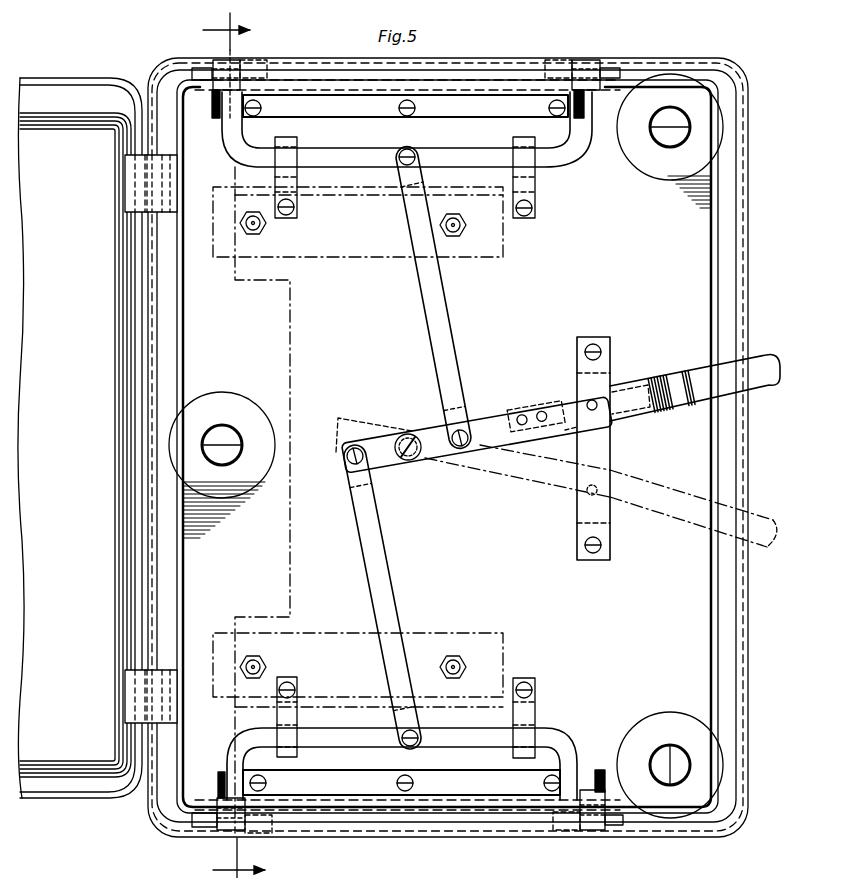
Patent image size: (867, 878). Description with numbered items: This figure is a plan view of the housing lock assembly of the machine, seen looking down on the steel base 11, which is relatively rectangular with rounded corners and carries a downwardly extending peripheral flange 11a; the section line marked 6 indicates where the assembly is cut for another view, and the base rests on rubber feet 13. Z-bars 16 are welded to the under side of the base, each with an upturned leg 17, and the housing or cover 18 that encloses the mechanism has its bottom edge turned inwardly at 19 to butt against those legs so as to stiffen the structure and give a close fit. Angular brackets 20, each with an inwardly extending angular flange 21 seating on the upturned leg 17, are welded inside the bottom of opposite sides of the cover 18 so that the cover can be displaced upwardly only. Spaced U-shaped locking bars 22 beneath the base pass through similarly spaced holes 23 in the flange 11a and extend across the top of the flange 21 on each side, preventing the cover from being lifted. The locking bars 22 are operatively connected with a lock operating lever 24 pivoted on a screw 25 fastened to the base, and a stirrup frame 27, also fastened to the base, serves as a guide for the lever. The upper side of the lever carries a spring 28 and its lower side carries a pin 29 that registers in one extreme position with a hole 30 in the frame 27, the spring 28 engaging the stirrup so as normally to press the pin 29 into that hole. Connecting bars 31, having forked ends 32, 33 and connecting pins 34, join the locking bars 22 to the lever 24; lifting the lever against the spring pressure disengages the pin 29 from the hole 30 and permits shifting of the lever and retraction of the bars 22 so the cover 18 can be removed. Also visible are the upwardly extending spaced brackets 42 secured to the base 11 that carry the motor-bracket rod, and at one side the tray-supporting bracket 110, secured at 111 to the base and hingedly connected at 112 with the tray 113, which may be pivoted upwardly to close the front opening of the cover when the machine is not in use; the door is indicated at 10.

The section line 6- 6 is at (224, 445).
The door 10 is at (113, 870).
The base 11 is at (704, 258).
The peripheral flange 11a is at (721, 605).
The rubber feet 13 is at (648, 171).
The Z-bars 16 is at (489, 78).
The upturned leg 17 is at (529, 72).
The housing 18 is at (407, 868).
The inturned bottom edge 19 is at (660, 60).
The angular brackets 20 is at (211, 62).
The angular flange 21 is at (200, 72).
The U-shaped locking bars 22 is at (228, 126).
The holes 23 is at (256, 68).
The lock operating lever 24 is at (698, 374).
The screw 25 is at (409, 461).
The stirrup frame 27 is at (604, 449).
The spring 28 is at (532, 407).
The pin 29 is at (598, 401).
The hole 30 is at (592, 411).
The connecting bars 31 is at (430, 313).
The forked end 32 is at (445, 409).
The forked end 33 is at (422, 181).
The connecting pins 34 is at (412, 152).
The upwardly extending brackets 42 is at (339, 192).
The tray-supporting bracket 110 is at (160, 212).
The securing point 111 is at (172, 159).
The hinge connection 112 is at (165, 204).
The tray 113 is at (80, 438).